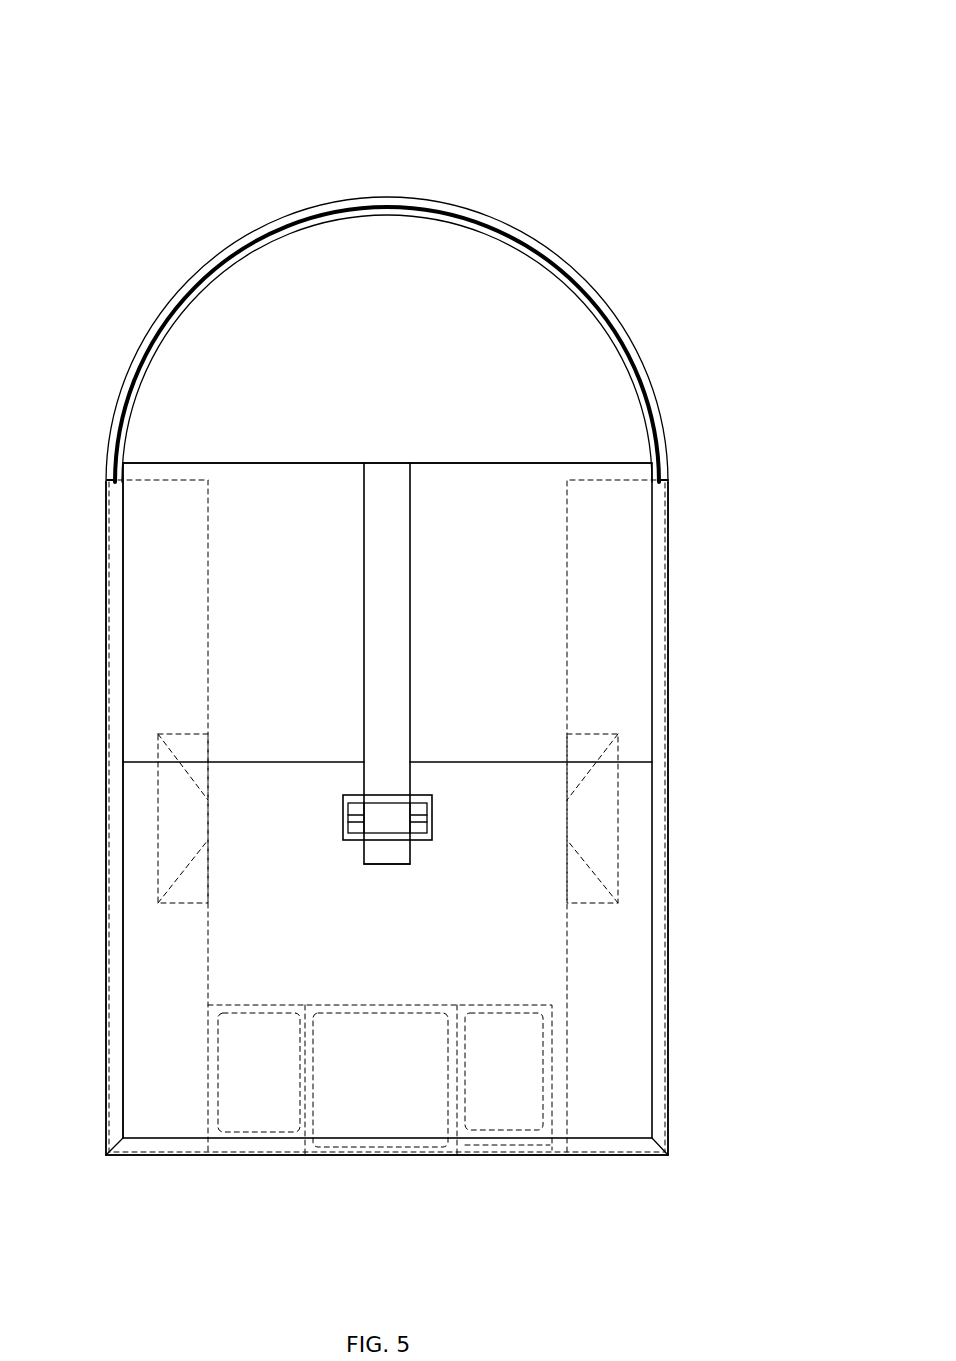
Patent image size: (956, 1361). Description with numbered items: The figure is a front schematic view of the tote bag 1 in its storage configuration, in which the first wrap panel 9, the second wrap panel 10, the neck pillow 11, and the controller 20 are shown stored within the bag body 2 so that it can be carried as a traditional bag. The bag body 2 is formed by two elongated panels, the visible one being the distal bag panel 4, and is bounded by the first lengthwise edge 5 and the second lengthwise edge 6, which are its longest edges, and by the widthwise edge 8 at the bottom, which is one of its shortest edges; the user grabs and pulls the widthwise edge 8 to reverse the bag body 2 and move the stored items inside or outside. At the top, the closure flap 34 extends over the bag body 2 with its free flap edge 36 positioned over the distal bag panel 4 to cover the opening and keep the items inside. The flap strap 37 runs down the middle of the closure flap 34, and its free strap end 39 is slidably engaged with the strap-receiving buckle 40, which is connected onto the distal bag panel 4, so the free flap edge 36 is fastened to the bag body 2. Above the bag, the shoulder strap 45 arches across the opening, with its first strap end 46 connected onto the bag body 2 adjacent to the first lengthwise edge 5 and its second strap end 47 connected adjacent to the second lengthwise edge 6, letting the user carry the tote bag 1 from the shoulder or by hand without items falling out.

The tote bag 1 is at (489, 68).
The bag body 2 is at (789, 1053).
The distal bag panel 4 is at (118, 965).
The first lengthwise edge 5 is at (119, 852).
The second lengthwise edge 6 is at (667, 992).
The widthwise edge 8 is at (180, 1157).
The first wrap panel 9 is at (197, 582).
The second wrap panel 10 is at (580, 626).
The neck pillow 11 is at (346, 1005).
The controller 20 is at (497, 1150).
The closure flap 34 is at (259, 478).
The free flap edge 36 is at (229, 760).
The flap strap 37 is at (380, 626).
The free strap end 39 is at (402, 858).
The strap-receiving buckle 40 is at (429, 822).
The shoulder strap 45 is at (525, 240).
The first strap end 46 is at (104, 478).
The second strap end 47 is at (671, 481).